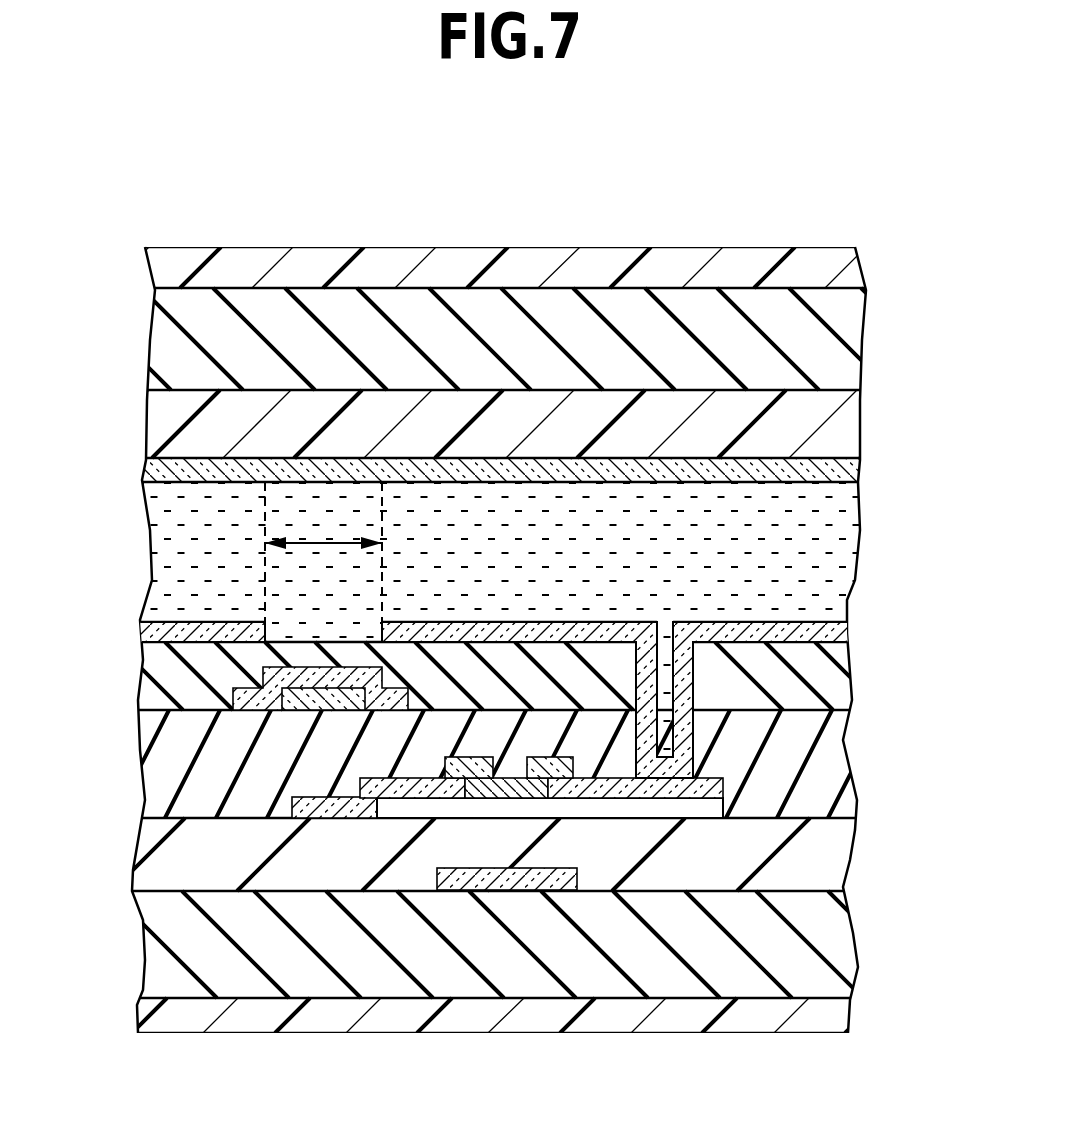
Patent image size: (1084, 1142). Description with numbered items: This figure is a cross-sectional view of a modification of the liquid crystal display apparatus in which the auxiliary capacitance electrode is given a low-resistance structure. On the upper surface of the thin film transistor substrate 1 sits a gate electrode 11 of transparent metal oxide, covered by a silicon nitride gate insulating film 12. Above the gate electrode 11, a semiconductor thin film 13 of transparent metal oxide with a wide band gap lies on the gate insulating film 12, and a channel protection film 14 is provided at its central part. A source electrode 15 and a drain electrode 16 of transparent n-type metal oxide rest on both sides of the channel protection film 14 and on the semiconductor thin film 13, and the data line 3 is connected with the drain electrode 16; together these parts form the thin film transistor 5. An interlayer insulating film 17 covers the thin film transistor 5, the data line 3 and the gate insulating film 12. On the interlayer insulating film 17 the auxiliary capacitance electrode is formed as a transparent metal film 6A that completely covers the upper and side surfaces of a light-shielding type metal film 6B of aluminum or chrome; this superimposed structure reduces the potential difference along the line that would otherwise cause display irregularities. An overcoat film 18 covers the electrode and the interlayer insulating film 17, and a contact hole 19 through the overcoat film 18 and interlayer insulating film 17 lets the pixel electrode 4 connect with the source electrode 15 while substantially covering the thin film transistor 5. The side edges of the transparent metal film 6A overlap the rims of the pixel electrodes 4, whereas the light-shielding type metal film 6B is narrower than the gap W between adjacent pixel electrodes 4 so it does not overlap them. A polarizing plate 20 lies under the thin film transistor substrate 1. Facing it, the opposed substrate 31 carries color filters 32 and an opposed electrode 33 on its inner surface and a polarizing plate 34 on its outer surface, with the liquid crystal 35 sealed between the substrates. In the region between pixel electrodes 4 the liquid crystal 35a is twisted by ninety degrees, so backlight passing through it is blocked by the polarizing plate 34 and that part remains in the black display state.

The thin film transistor substrate 1 is at (803, 967).
The data line 3 is at (334, 818).
The pixel electrode 4 is at (220, 632).
The thin film transistor 5 is at (469, 758).
The transparent metal film 6A is at (232, 702).
The light-shielding type metal film 6B is at (298, 712).
The gate electrode 11 is at (500, 890).
The gate insulating film 12 is at (802, 850).
The semiconductor thin film 13 is at (625, 808).
The channel protection film 14 is at (540, 790).
The source electrode 15 is at (690, 793).
The drain electrode 16 is at (417, 790).
The interlayer insulating film 17 is at (802, 752).
The overcoat film 18 is at (812, 670).
The contact hole 19 is at (632, 682).
The polarizing plate 20 is at (803, 1018).
The opposed substrate 31 is at (817, 348).
The color filters 32 is at (817, 418).
The opposed electrode 33 is at (700, 482).
The polarizing plate 34 is at (817, 270).
The liquid crystal 35 is at (817, 548).
The liquid crystal 35a is at (355, 500).
The gap W is at (295, 540).